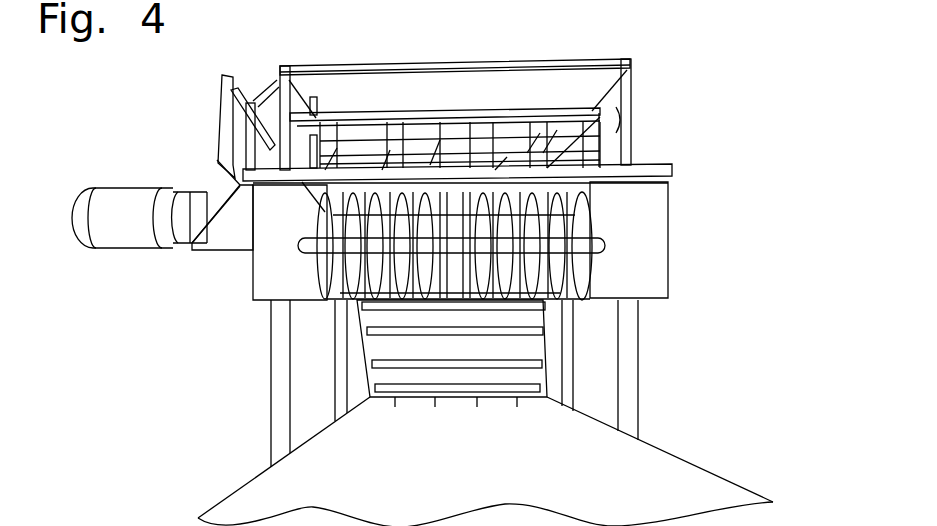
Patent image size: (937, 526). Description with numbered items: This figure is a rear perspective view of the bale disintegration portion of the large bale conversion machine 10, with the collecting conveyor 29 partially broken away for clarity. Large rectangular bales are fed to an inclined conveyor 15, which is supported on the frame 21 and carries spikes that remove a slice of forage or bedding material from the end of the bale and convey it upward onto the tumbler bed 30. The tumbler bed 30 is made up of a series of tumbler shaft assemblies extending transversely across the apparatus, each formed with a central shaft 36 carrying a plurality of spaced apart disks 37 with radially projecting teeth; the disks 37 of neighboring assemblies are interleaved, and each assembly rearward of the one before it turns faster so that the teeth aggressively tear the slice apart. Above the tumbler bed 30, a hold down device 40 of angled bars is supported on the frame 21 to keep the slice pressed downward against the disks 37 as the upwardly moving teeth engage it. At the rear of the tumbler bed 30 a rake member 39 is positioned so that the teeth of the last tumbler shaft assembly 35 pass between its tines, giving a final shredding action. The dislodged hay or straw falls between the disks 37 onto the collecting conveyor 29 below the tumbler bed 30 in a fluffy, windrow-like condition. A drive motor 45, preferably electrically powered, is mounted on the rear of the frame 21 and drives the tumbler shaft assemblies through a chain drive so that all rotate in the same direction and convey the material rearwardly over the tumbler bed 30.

The large bale conversion machine 10 is at (658, 116).
The inclined conveyor 15 is at (387, 352).
The frame 21 is at (276, 416).
The collecting conveyor 29 is at (603, 477).
The tumbler bed 30 is at (612, 268).
The last tumbler shaft assembly 35 is at (605, 240).
The central shaft 36 is at (310, 248).
The disks 37 is at (325, 286).
The rake member 39 is at (655, 166).
The hold down device 40 is at (428, 112).
The drive motor 45 is at (106, 232).